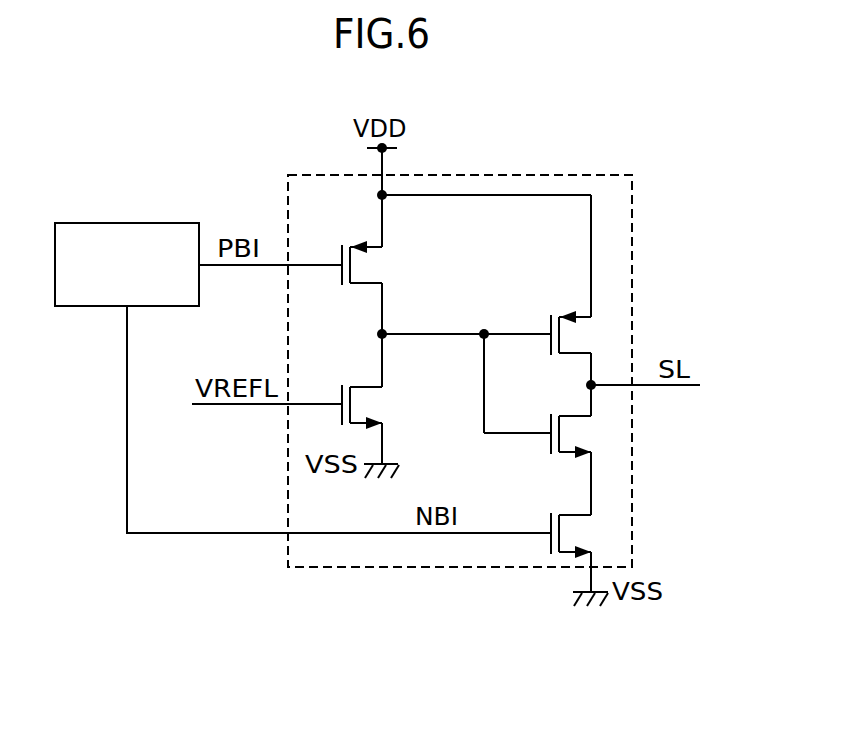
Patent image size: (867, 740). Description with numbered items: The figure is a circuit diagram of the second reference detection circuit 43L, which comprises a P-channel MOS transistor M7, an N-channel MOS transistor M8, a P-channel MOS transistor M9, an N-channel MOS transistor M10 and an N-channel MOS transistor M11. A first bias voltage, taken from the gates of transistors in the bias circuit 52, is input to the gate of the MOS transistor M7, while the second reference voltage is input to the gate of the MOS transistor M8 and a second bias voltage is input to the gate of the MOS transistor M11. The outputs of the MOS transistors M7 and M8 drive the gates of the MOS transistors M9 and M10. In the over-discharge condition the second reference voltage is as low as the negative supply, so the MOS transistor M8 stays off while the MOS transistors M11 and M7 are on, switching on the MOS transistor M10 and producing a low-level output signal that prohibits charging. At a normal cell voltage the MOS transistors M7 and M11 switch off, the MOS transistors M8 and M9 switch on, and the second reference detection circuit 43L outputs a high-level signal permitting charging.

The bias circuit 52 is at (120, 223).
The second reference detection circuit 43L is at (636, 213).
The P-channel MOS transistor M7 is at (338, 246).
The N-channel MOS transistor M8 is at (338, 388).
The P-channel MOS transistor M9 is at (548, 316).
The N-channel MOS transistor M10 is at (548, 416).
The N-channel MOS transistor M11 is at (548, 515).